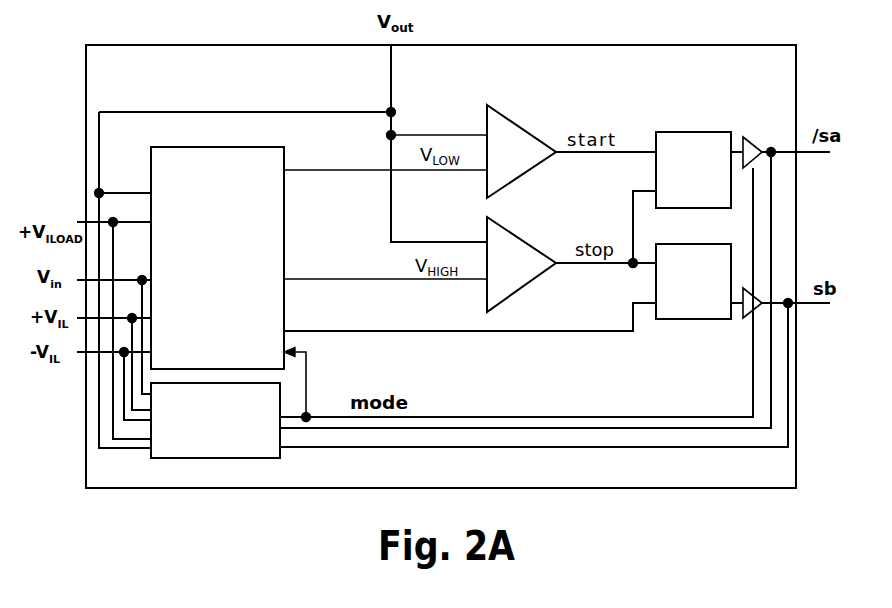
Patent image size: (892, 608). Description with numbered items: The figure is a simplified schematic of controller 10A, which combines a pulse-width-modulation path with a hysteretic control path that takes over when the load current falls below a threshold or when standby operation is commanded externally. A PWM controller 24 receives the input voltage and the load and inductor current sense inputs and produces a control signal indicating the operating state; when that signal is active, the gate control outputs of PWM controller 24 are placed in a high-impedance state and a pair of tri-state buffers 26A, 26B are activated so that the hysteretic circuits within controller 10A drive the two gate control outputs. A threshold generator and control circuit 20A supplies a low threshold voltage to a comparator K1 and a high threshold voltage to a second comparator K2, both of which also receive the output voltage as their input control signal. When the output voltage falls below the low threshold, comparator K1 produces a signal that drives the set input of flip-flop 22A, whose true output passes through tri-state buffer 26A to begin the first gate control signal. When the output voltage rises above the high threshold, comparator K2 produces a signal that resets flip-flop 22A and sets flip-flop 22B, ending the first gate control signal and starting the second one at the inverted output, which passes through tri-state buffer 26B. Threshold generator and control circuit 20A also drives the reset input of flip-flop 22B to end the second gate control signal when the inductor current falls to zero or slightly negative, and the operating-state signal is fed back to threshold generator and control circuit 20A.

The controller 10A is at (441, 266).
The threshold generator and control circuit 20A is at (217, 258).
The PWM controller 24 is at (215, 420).
The flip-flop 22A is at (667, 132).
The flip-flop 22B is at (672, 319).
The tri-state buffer 26A is at (752, 137).
The tri-state buffer 26B is at (745, 318).
The comparator K1 is at (518, 123).
The comparator K2 is at (527, 247).